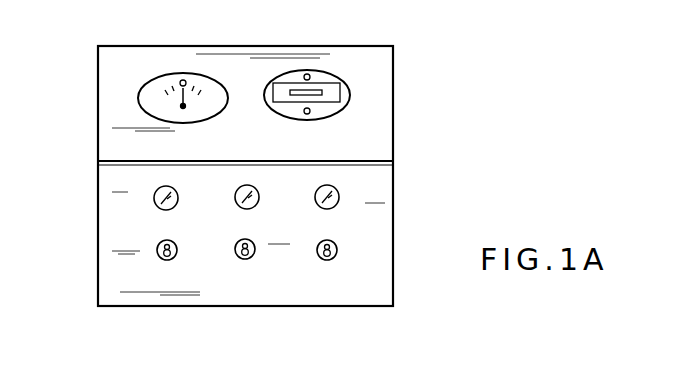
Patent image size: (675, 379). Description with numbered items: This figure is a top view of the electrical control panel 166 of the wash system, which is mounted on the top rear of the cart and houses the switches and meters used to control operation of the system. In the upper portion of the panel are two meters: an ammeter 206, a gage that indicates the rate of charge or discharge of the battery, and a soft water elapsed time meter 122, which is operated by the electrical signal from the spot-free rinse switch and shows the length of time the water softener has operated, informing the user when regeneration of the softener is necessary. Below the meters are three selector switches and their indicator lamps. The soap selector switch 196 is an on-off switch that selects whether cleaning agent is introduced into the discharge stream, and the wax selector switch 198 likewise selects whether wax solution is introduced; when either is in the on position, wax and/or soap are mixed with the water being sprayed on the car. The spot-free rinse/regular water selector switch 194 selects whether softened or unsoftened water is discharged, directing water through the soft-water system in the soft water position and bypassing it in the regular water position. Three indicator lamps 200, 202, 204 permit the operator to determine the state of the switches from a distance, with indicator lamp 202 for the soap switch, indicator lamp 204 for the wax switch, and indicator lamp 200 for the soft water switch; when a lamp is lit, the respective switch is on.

The soft water elapsed time meter 122 is at (350, 91).
The electrical control panel 166 is at (393, 171).
The spot-free rinse/regular water selector switch 194 is at (337, 249).
The soap selector switch 196 is at (156, 256).
The wax selector switch 198 is at (238, 258).
The indicator lamp 200 is at (339, 195).
The indicator lamp 202 is at (154, 197).
The indicator lamp 204 is at (238, 186).
The ammeter 206 is at (200, 77).